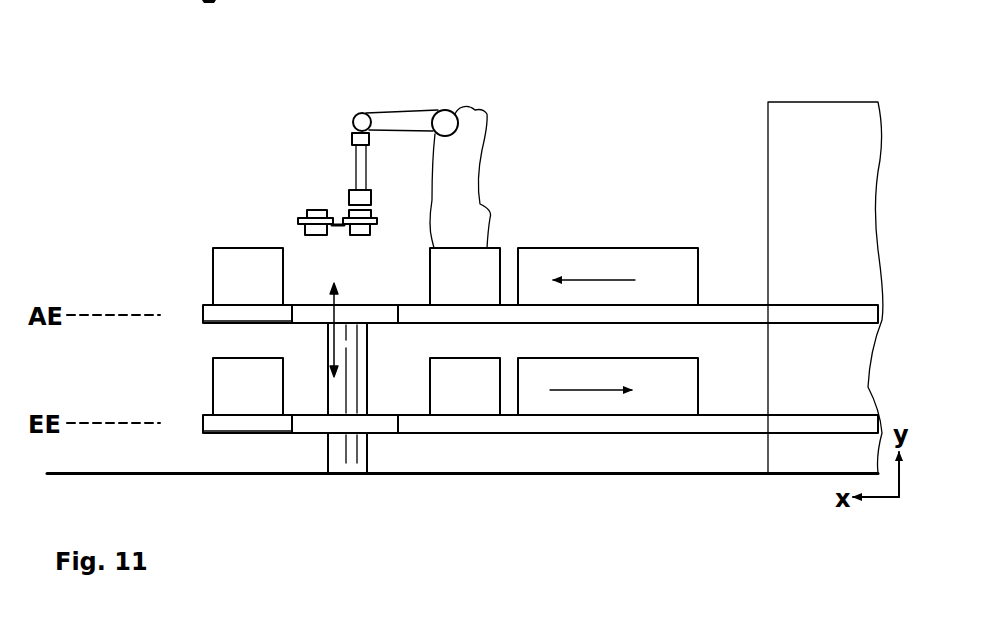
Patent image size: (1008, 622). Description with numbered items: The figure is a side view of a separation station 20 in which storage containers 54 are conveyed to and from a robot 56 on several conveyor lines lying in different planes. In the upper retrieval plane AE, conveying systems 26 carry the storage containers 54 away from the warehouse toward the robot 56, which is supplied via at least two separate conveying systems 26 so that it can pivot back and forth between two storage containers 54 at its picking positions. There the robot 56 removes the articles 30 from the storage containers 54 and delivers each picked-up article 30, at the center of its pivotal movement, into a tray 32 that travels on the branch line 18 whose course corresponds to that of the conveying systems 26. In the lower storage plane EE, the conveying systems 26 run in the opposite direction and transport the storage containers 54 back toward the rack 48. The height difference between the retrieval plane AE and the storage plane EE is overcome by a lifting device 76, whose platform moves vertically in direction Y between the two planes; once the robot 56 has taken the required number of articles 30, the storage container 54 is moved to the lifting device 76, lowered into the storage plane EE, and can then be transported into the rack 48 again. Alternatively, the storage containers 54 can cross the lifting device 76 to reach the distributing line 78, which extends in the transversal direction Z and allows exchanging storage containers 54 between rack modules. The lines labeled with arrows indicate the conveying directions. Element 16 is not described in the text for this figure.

The workpiece 16 is at (312, 210).
The branch line 18 is at (367, 245).
The separation station 20 is at (420, 183).
The conveying system 26 is at (737, 305).
The article 30 is at (372, 198).
The tray 32 is at (377, 217).
The rack 48 is at (825, 101).
The storage container 54 is at (240, 248).
The robot 56 is at (487, 122).
The lifting device 76 is at (330, 397).
The distributing line 78 is at (194, 322).